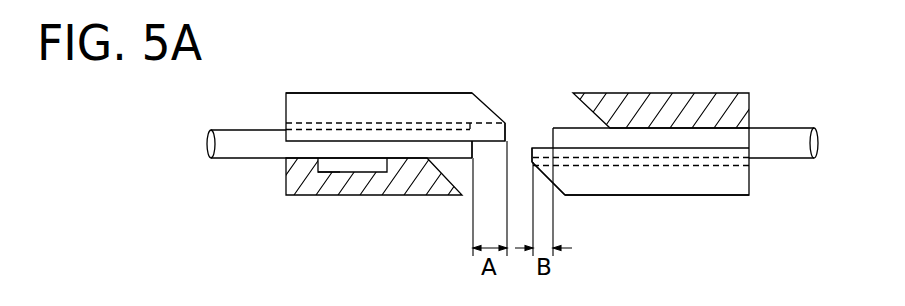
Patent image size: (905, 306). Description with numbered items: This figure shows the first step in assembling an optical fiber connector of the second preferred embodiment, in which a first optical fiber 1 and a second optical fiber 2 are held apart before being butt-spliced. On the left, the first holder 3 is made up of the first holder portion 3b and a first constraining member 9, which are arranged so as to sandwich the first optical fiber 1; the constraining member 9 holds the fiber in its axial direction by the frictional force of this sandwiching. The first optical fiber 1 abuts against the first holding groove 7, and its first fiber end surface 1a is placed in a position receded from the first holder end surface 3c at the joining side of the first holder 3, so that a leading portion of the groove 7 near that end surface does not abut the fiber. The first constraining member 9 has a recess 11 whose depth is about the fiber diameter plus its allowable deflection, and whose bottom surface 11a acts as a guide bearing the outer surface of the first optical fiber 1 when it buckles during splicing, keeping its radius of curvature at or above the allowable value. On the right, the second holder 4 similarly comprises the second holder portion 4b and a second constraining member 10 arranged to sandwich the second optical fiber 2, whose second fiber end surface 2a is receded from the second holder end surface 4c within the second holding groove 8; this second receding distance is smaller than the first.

The first optical fiber 1 is at (237, 130).
The first fiber end surface 1a is at (472, 151).
The second optical fiber 2 is at (781, 127).
The second fiber end surface 2a is at (552, 147).
The first holder 3 is at (325, 93).
The first holder portion 3b is at (440, 93).
The first holder end surface 3c is at (506, 130).
The second holder 4 is at (688, 195).
The second holder portion 4b is at (627, 195).
The second holder end surface 4c is at (532, 157).
The first holding groove 7 is at (297, 142).
The second holding groove 8 is at (748, 140).
The first constraining member 9 is at (415, 195).
The second constraining member 10 is at (665, 93).
The recess 11 is at (358, 172).
The bottom surface 11a is at (330, 168).